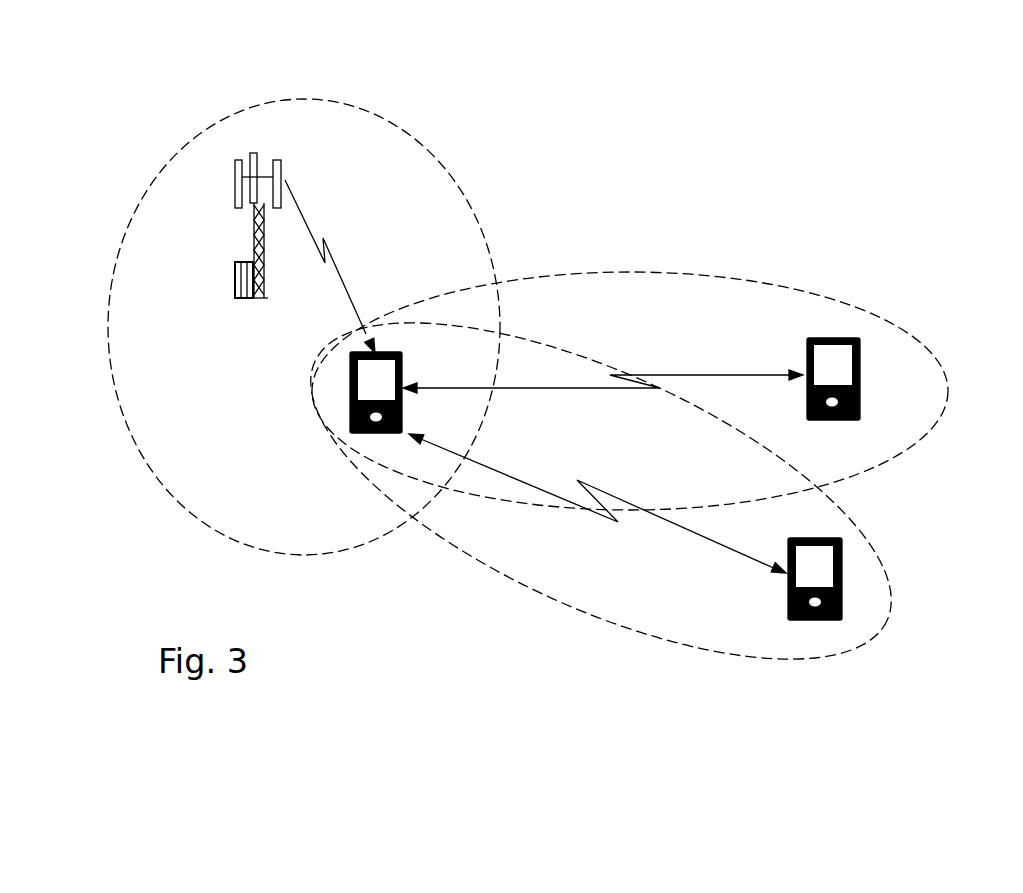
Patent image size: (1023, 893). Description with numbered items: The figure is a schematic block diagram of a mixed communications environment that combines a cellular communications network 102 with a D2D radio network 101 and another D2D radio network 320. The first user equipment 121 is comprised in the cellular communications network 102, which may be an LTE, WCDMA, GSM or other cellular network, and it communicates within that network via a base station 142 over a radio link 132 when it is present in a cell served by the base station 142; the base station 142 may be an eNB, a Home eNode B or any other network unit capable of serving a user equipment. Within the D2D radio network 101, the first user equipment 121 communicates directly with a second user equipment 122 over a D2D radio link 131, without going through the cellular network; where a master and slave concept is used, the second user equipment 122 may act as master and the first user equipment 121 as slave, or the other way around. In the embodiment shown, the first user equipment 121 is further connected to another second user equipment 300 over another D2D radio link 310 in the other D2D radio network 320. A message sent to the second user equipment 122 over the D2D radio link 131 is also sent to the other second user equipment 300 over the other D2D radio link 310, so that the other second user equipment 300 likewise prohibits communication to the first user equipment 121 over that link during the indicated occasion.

The D2D radio network 101 is at (813, 292).
The cellular communications network 102 is at (363, 107).
The first user equipment 121 is at (350, 398).
The second user equipment 122 is at (863, 377).
The D2D radio link 131 is at (575, 388).
The radio link 132 is at (302, 203).
The base station 142 is at (235, 193).
The other second user equipment 300 is at (843, 577).
The other D2D radio link 310 is at (663, 520).
The other D2D radio network 320 is at (675, 642).